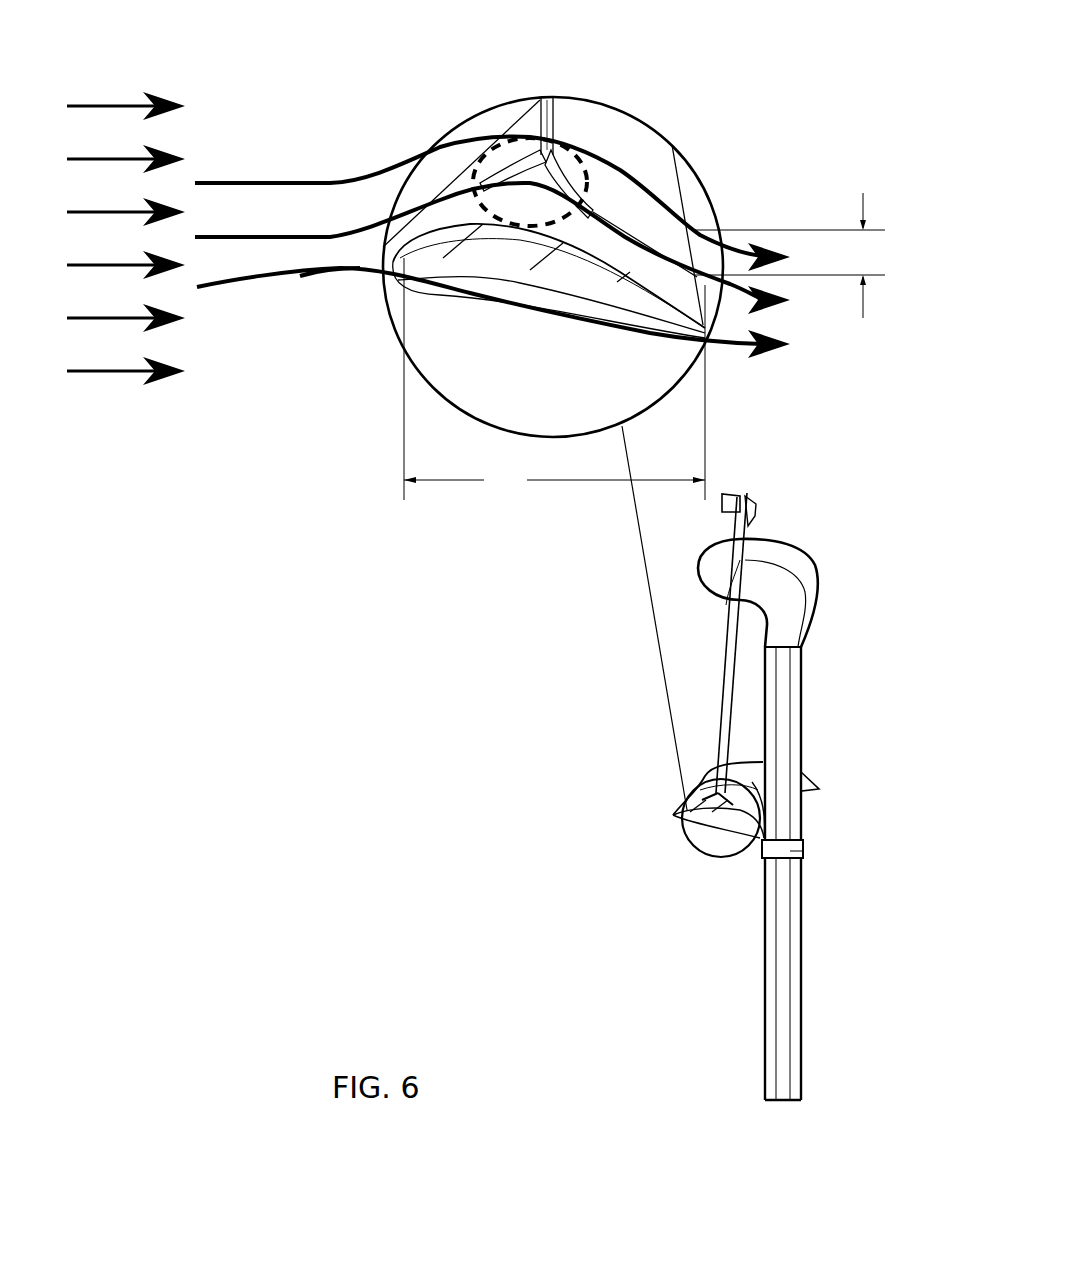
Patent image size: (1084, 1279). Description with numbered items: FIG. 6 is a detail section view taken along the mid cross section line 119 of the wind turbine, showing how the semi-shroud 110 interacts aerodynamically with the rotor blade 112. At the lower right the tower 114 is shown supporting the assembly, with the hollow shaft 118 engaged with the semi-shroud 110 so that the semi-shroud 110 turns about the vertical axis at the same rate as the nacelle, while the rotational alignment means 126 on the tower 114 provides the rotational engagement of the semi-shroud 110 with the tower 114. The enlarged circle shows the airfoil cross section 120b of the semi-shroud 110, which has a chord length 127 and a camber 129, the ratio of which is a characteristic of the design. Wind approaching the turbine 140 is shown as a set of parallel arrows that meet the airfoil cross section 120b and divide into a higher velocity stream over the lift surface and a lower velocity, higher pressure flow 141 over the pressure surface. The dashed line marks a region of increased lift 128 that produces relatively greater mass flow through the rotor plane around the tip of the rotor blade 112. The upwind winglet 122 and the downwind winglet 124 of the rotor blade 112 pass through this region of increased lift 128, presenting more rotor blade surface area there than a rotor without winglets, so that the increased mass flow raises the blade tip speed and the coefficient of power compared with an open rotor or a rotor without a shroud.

The semi-shroud 110 is at (680, 816).
The rotor blade 112 is at (540, 103).
The tower 114 is at (780, 1040).
The hollow shaft 118 is at (782, 706).
The mid cross section line 119 is at (728, 206).
The airfoil cross section 120b is at (490, 257).
The upwind winglet 122 is at (486, 182).
The downwind winglet 124 is at (600, 210).
The rotational alignment means 126 is at (803, 851).
The chord length 127 is at (554, 379).
The region of increased lift 128 is at (583, 163).
The camber 129 is at (790, 255).
The wind approaching a turbine 140 is at (117, 158).
The lower velocity, higher pressure flow 141 is at (336, 270).